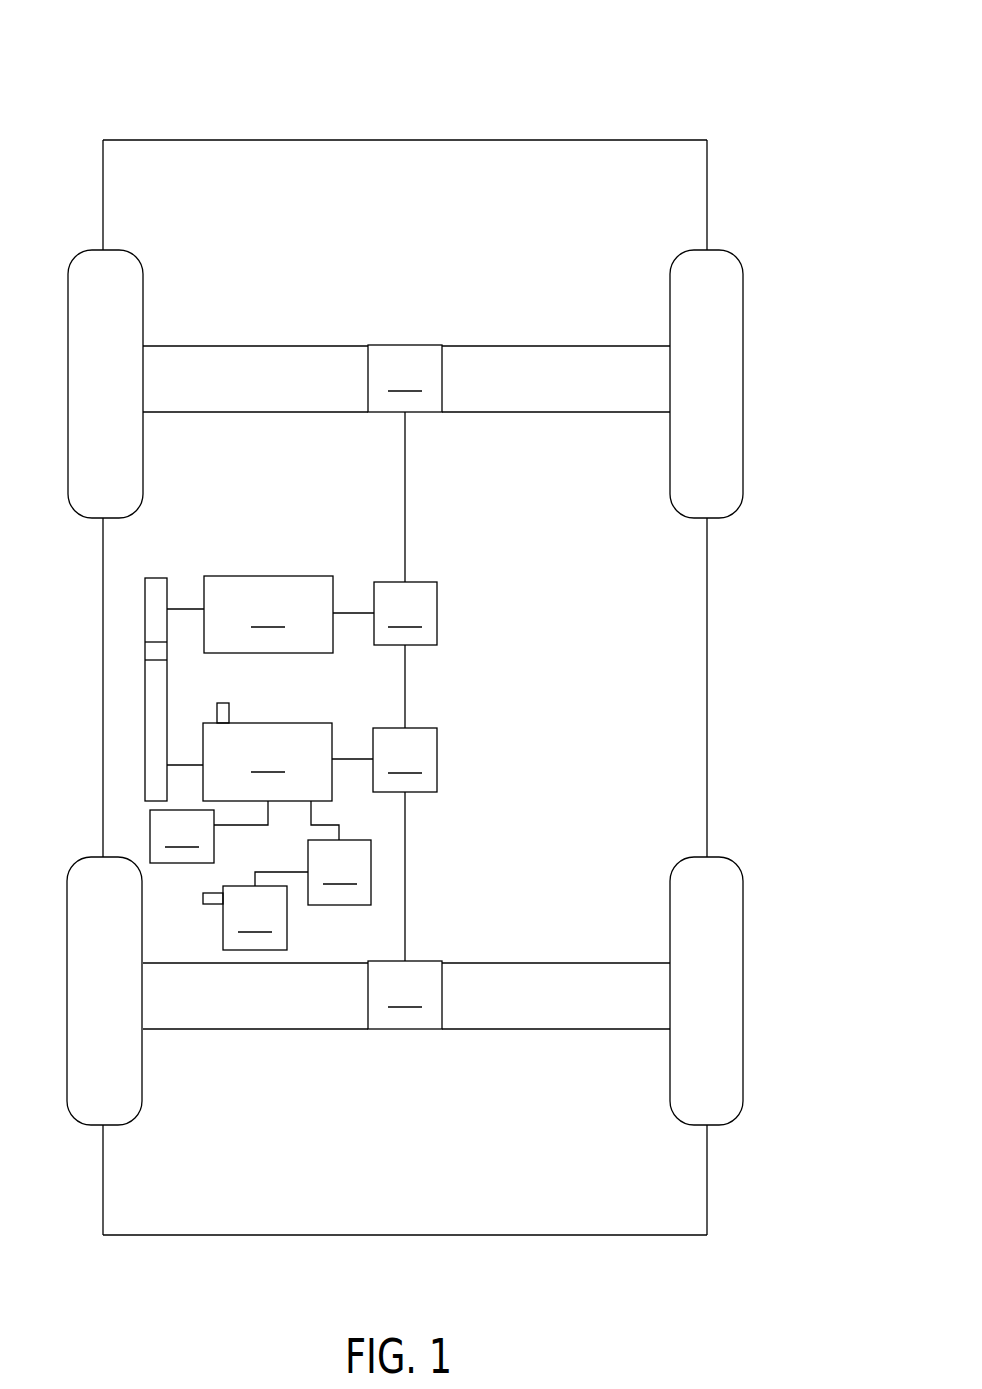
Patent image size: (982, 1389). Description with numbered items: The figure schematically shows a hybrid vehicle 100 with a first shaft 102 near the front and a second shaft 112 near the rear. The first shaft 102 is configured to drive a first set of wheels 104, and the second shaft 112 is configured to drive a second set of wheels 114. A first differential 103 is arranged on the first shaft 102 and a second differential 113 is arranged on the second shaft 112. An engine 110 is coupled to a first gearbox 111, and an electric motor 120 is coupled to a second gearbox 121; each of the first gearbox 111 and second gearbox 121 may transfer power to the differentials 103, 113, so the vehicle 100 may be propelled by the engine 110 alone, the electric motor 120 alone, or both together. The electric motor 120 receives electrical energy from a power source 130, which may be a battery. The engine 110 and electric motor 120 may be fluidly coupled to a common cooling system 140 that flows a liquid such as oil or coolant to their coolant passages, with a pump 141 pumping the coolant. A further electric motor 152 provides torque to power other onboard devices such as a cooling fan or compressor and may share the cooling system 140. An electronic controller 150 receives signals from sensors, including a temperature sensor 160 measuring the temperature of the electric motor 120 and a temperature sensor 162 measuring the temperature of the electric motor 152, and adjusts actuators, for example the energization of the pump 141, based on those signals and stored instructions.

The vehicle 100 is at (752, 27).
The first shaft 102 is at (570, 345).
The first differential 103 is at (405, 378).
The first set of wheels 104 is at (75, 259).
The engine 110 is at (270, 614).
The first gearbox 111 is at (405, 613).
The second shaft 112 is at (578, 962).
The second differential 113 is at (405, 995).
The second set of wheels 114 is at (80, 859).
The electric motor 120 is at (270, 762).
The second gearbox 121 is at (405, 760).
The power source 130 is at (209, 832).
The cooling system 140 is at (145, 691).
The pump 141 is at (145, 651).
The controller 150 is at (339, 853).
The electric motor 152 is at (265, 911).
The temperature sensor 160 is at (222, 702).
The temperature sensor 162 is at (203, 898).